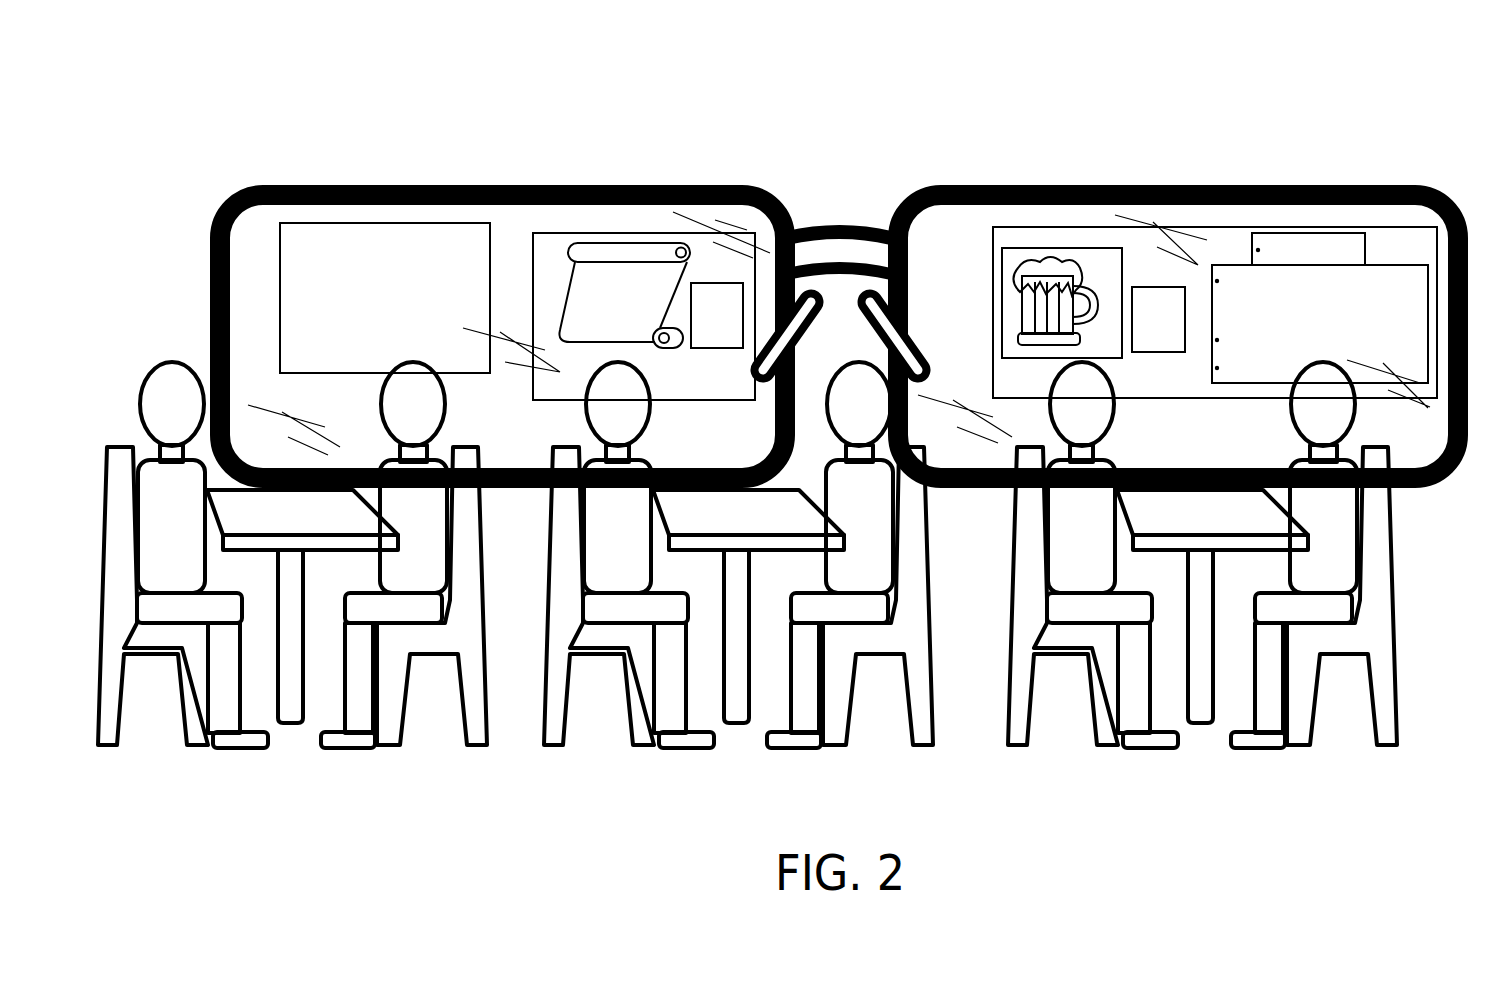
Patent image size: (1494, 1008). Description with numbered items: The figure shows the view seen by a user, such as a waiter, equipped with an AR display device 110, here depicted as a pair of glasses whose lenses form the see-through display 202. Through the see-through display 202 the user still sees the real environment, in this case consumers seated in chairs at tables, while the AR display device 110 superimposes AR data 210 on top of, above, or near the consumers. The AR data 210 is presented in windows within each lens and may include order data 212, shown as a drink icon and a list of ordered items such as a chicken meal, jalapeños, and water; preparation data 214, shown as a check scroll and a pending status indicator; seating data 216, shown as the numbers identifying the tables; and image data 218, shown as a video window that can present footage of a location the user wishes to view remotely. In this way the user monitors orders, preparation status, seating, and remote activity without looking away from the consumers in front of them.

The AR display device 110 is at (1062, 70).
The see-through display 202 is at (929, 258).
The AR data 210 is at (328, 222).
The order data 212 is at (1028, 247).
The preparation data 214 is at (628, 235).
The seating data 216 is at (730, 283).
The image data 218 is at (407, 222).